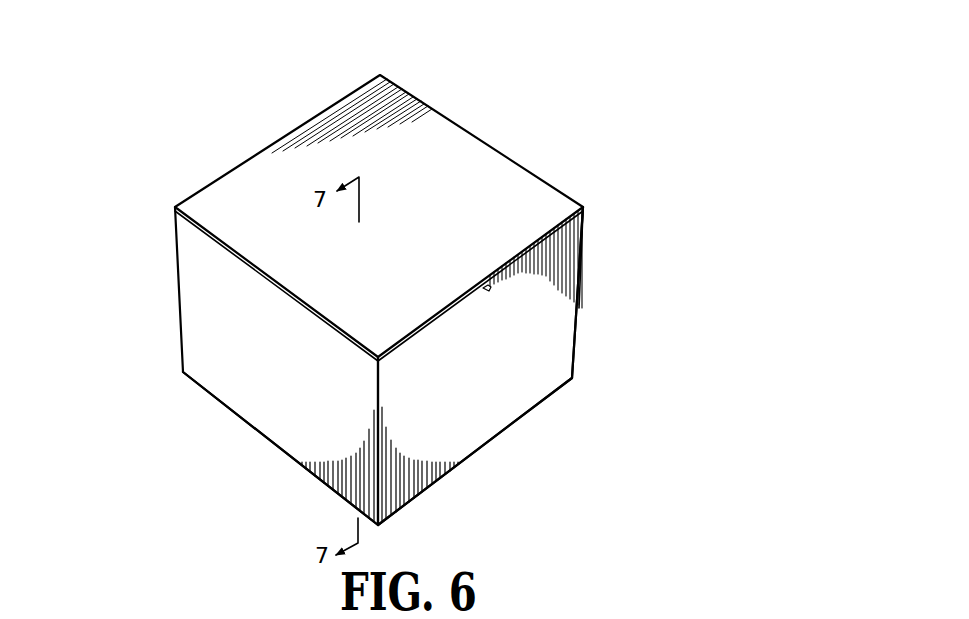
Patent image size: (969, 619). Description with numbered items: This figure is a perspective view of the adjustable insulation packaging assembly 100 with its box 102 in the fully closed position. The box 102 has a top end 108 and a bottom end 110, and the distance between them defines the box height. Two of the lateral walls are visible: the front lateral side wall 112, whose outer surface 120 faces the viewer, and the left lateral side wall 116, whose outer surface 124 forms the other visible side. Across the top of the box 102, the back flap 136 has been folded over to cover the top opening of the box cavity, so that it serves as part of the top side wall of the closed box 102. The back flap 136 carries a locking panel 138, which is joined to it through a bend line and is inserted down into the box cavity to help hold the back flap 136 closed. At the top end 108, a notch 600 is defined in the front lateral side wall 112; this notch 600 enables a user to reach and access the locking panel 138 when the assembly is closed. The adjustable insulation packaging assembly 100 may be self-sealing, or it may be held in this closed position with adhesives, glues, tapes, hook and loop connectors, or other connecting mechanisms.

The adjustable insulation packaging assembly 100 is at (411, 263).
The box 102 is at (402, 181).
The top end 108 is at (587, 213).
The bottom end 110 is at (523, 418).
The front lateral side wall 112 is at (546, 366).
The left lateral side wall 116 is at (232, 398).
The outer surface 120 is at (495, 437).
The outer surface 124 is at (217, 320).
The back flap 136 is at (482, 183).
The locking panel 138 is at (487, 287).
The notch 600 is at (490, 291).